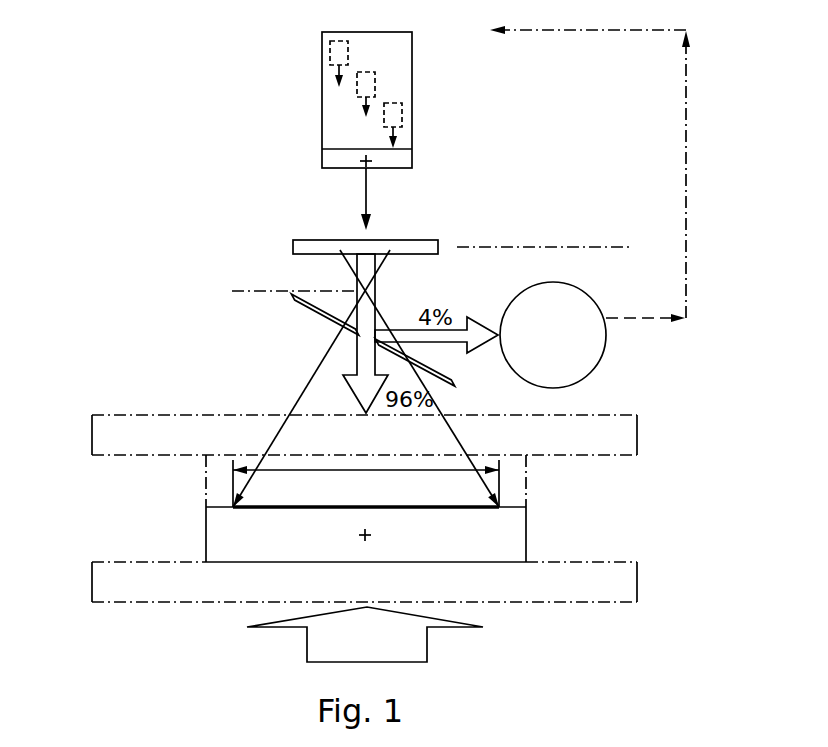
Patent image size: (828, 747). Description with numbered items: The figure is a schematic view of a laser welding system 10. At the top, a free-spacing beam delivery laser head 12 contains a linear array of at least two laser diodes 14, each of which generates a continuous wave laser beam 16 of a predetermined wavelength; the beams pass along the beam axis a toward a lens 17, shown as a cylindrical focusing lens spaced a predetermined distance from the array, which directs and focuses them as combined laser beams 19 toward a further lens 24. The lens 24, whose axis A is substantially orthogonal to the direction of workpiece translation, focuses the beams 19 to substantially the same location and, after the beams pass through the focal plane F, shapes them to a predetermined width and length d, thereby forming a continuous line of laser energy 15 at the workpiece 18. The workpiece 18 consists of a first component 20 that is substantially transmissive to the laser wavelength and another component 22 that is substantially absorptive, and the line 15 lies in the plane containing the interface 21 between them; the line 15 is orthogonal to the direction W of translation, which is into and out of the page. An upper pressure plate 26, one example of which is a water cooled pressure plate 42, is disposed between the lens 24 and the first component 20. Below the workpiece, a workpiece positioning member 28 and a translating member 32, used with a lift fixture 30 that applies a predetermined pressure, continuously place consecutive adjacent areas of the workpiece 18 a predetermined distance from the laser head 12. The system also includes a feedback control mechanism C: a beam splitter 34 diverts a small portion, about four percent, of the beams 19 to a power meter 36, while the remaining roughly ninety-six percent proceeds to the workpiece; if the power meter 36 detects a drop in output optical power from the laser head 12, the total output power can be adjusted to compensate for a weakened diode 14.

The laser welding system 10 is at (512, 67).
The laser head 12 is at (412, 122).
The laser diodes 14 is at (350, 46).
The continuous line of laser energy 15 is at (290, 507).
The laser beams 16 is at (338, 70).
The lens 17 is at (412, 161).
The workpiece 18 is at (542, 511).
The laser beams 19 is at (364, 199).
The first component 20 is at (206, 477).
The interface 21 is at (206, 507).
The other component 22 is at (527, 533).
The lens 24 is at (438, 246).
The upper pressure plate 26 is at (431, 435).
The water cooled pressure plate 42 is at (637, 433).
The workpiece positioning member 28 is at (637, 578).
The lift fixture 30 is at (427, 640).
The translating member 32 is at (162, 620).
The beam splitter 34 is at (318, 312).
The power meter 36 is at (607, 335).
The beam axis a is at (360, 162).
The width and length d is at (365, 471).
The direction of translation W is at (372, 535).
The axis A is at (598, 247).
The feedback control mechanism C is at (686, 127).
The focal plane F is at (240, 297).